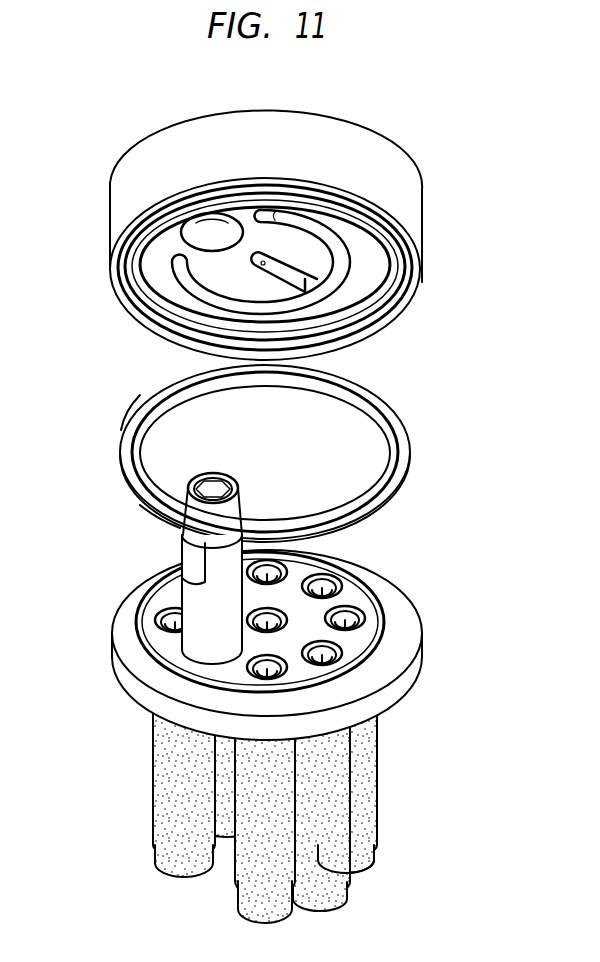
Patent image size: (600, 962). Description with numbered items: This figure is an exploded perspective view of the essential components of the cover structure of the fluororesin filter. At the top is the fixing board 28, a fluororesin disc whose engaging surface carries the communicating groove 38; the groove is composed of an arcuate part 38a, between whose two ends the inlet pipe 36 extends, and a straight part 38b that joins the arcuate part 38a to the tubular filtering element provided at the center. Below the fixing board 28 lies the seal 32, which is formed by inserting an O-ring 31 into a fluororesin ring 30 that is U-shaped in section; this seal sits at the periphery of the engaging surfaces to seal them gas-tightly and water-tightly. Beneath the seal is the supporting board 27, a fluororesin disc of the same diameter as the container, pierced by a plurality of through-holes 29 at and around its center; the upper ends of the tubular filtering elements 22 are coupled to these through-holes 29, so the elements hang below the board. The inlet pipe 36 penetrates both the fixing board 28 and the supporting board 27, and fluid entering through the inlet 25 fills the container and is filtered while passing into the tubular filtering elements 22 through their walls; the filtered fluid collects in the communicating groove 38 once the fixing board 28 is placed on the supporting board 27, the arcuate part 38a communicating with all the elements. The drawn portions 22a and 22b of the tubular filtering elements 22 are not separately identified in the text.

The fixing board 28 is at (390, 173).
The communicating groove 38 is at (197, 290).
The arcuate part 38a is at (278, 217).
The straight part 38b is at (262, 265).
The seal 32 is at (398, 417).
The fluororesin ring 30 is at (124, 432).
The O-ring 31 is at (162, 522).
The inlet 25 is at (203, 475).
The inlet pipe 36 is at (200, 643).
The supporting board 27 is at (408, 640).
The through-holes 29 is at (353, 605).
The tubular filtering elements 22 is at (247, 796).
The cartridge lower end 22a is at (338, 897).
The cartridge body 22b is at (338, 818).